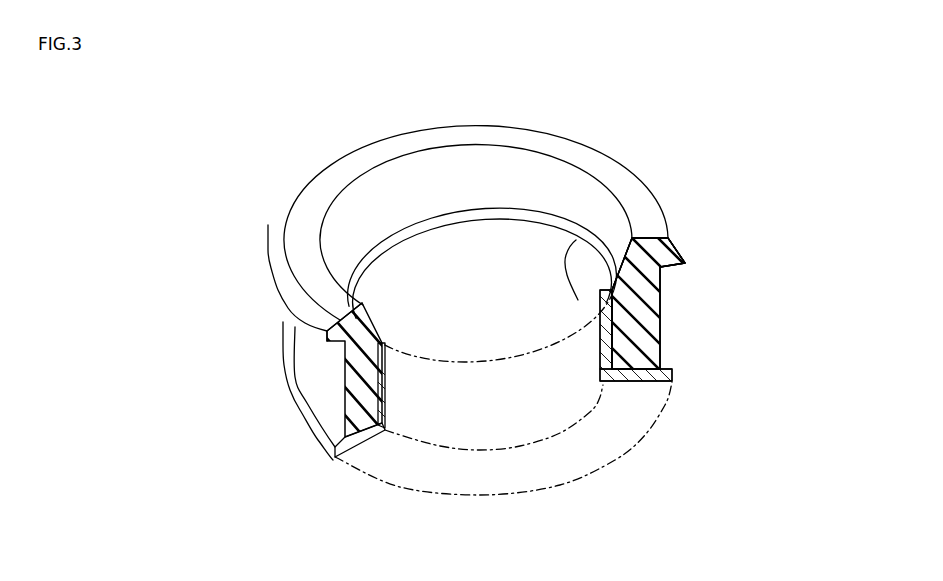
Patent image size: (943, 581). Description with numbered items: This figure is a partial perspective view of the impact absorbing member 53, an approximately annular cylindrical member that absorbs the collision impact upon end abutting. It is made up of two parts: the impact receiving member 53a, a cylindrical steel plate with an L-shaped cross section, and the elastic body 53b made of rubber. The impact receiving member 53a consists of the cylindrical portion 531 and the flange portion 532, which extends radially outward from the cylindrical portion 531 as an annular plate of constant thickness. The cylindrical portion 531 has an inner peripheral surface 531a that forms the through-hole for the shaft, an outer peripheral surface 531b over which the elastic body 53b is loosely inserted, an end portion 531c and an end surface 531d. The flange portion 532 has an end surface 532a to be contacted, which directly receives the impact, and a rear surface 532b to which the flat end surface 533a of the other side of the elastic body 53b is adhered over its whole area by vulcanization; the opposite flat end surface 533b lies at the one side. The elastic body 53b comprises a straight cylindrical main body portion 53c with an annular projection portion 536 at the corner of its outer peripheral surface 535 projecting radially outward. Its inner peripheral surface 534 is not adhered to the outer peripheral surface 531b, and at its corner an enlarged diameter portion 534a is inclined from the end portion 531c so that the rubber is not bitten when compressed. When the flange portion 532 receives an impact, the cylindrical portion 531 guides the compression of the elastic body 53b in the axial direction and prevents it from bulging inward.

The impact absorbing member 53 is at (302, 157).
The impact receiving member 53a is at (408, 430).
The elastic body 53b is at (642, 297).
The main body portion 53c is at (648, 303).
The cylindrical portion 531 is at (598, 369).
The inner peripheral surface 531a is at (618, 256).
The outer peripheral surface 531b is at (637, 383).
The end portion 531c is at (576, 240).
The end surface 531d is at (542, 216).
The flange portion 532 is at (652, 382).
The end surface to be contacted 532a is at (652, 383).
The rear surface 532b is at (652, 355).
The end surface of the other side 533a is at (337, 478).
The end surface of the one side 533b is at (317, 283).
The inner peripheral surface 534 is at (685, 248).
The enlarged diameter portion 534a is at (652, 228).
The outer peripheral surface 535 is at (327, 392).
The annular projection portion 536 is at (323, 344).